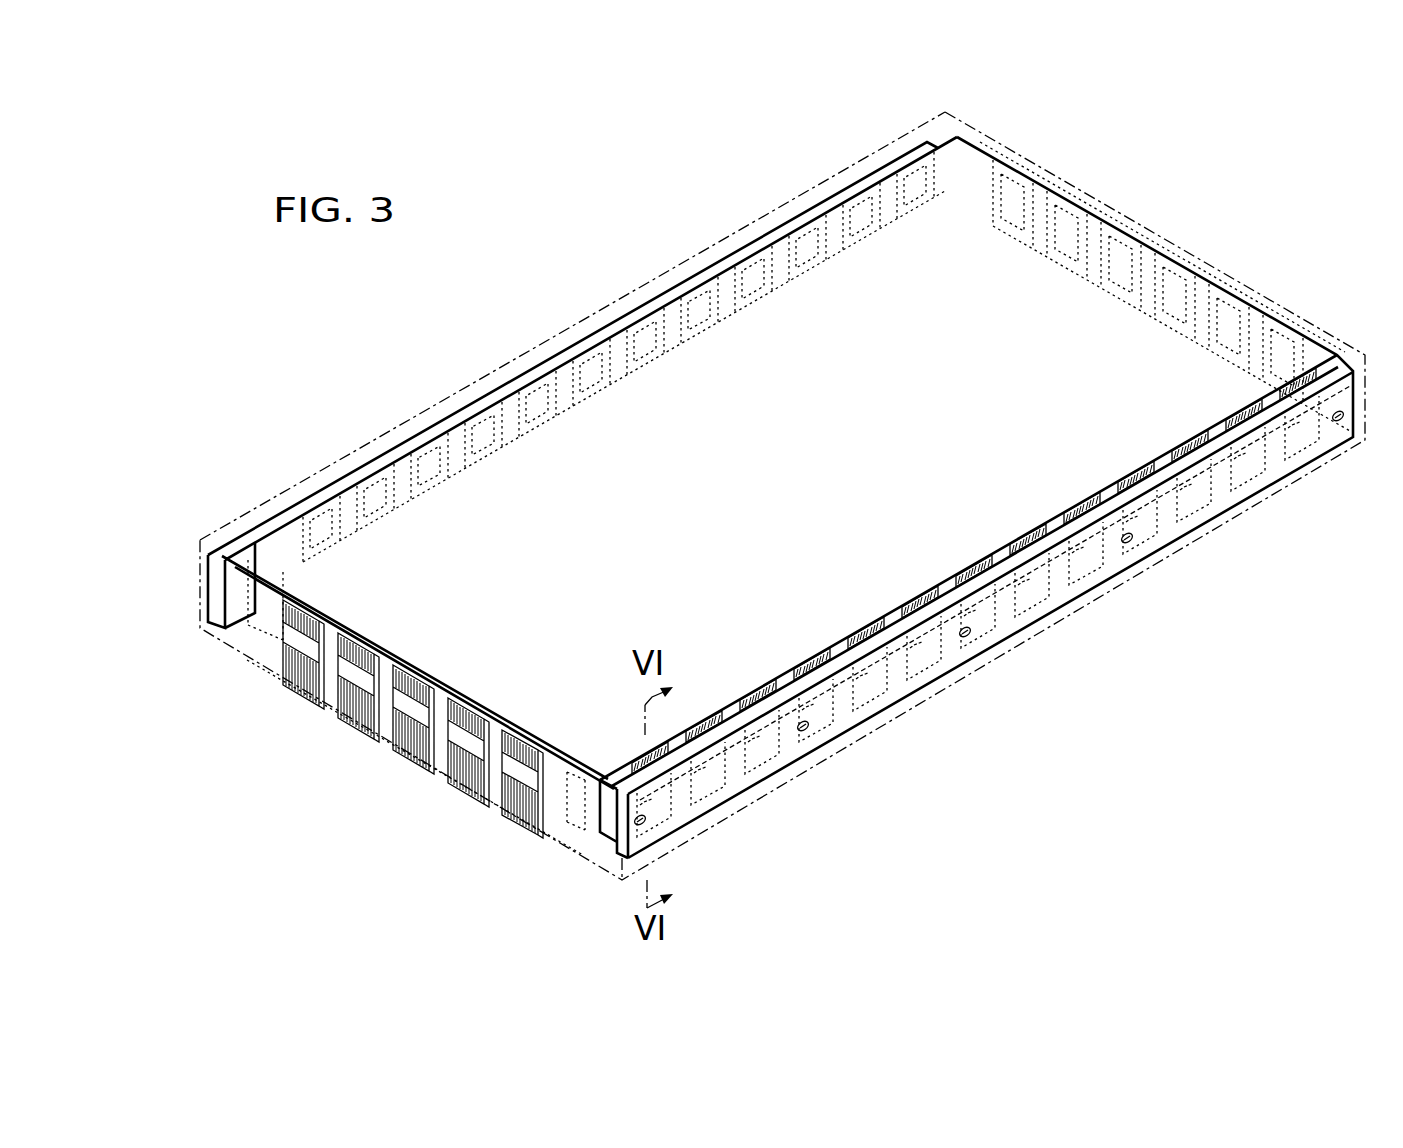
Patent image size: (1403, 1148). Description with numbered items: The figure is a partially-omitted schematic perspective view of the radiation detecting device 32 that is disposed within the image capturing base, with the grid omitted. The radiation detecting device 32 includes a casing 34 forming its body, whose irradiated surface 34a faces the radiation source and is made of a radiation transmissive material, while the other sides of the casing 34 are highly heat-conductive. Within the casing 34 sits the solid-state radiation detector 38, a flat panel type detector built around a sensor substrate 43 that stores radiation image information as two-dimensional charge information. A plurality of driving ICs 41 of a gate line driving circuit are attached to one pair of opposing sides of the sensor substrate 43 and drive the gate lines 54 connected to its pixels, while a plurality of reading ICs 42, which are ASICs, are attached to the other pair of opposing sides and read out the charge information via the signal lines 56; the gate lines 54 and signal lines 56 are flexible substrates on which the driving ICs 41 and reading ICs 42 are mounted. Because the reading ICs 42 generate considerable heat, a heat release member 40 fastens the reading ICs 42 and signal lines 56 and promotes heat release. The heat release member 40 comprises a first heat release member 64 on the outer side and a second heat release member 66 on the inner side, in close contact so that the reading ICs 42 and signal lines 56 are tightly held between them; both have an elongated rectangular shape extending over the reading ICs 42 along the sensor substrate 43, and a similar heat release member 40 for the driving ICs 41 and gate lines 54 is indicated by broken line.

The radiation detecting device 32 is at (556, 251).
The casing 34 is at (197, 569).
The irradiated surface 34a is at (524, 352).
The solid-state radiation detector 38 is at (563, 804).
The heat release member 40 is at (212, 640).
The driving ICs 41 is at (308, 644).
The reading ICs 42 is at (805, 757).
The sensor substrate 43 is at (443, 540).
The gate lines 54 is at (357, 643).
The signal lines 56 is at (758, 689).
The first heat release member 64 is at (222, 596).
The second heat release member 66 is at (246, 628).